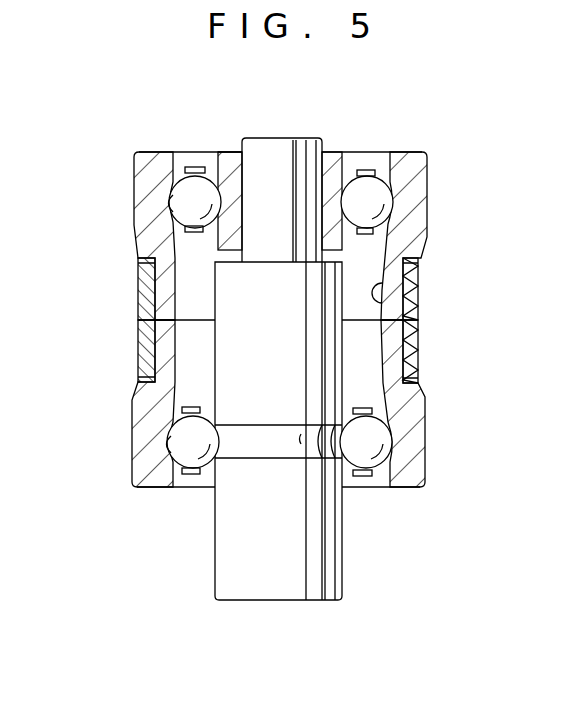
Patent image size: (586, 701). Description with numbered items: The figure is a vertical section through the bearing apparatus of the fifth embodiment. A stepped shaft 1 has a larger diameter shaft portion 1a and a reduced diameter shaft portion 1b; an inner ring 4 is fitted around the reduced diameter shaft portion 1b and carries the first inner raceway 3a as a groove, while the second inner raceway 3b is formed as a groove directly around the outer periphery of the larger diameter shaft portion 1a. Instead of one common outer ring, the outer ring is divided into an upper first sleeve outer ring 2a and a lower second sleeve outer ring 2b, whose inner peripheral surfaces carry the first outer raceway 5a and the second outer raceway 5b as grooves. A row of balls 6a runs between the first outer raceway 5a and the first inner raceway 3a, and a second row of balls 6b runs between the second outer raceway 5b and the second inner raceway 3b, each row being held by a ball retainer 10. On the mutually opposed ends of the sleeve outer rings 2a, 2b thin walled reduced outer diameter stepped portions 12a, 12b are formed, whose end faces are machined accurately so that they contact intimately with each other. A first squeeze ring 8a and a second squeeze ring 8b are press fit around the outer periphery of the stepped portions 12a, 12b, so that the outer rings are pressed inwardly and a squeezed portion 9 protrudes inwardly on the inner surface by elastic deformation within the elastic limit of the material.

The stepped shaft 1 is at (278, 373).
The larger diameter shaft portion 1a is at (262, 585).
The reduced diameter shaft portion 1b is at (262, 150).
The first sleeve outer ring 2a is at (415, 203).
The second sleeve outer ring 2b is at (413, 453).
The first inner raceway 3a is at (204, 162).
The second inner raceway 3b is at (262, 450).
The inner ring 4 is at (233, 158).
The first outer raceway 5a is at (172, 210).
The second outer raceway 5b is at (166, 450).
The balls for the first row 6a is at (182, 190).
The balls for the second row 6b is at (180, 427).
The first squeeze ring 8a is at (421, 302).
The second squeeze ring 8b is at (421, 342).
The squeezed portion 9 is at (420, 265).
The ball retainer 10 is at (367, 168).
The reduced outer diameter stepped portion 12a is at (420, 280).
The reduced outer diameter stepped portion 12b is at (420, 367).